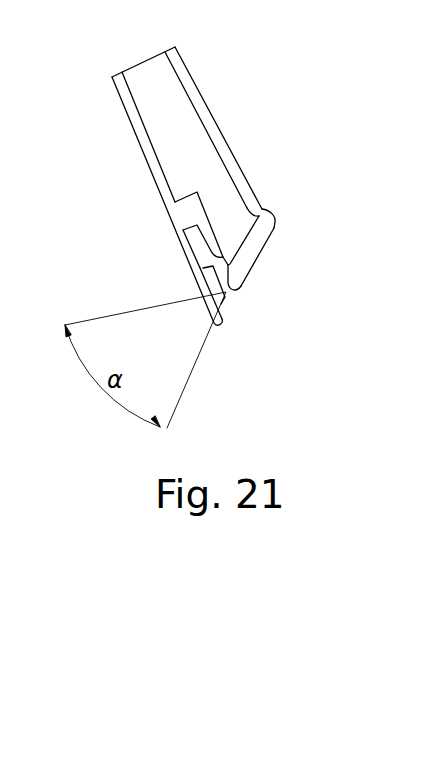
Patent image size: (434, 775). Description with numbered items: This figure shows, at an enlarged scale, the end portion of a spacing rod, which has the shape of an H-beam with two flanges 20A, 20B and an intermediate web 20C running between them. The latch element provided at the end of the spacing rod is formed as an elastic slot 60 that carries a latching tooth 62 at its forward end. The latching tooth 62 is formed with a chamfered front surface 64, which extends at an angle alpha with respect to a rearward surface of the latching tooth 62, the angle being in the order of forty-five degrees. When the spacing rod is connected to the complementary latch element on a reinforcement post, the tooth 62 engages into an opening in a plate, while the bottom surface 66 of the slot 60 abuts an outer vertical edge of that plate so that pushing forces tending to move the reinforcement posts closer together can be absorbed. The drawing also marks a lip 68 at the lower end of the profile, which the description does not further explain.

The flange 20A is at (188, 80).
The flange 20B is at (123, 100).
The intermediate web 20C is at (150, 85).
The elastic slot 60 is at (237, 297).
The latching tooth 62 is at (212, 279).
The chamfered front surface 64 is at (225, 308).
The bottom surface 66 is at (188, 230).
The lip 68 is at (198, 297).